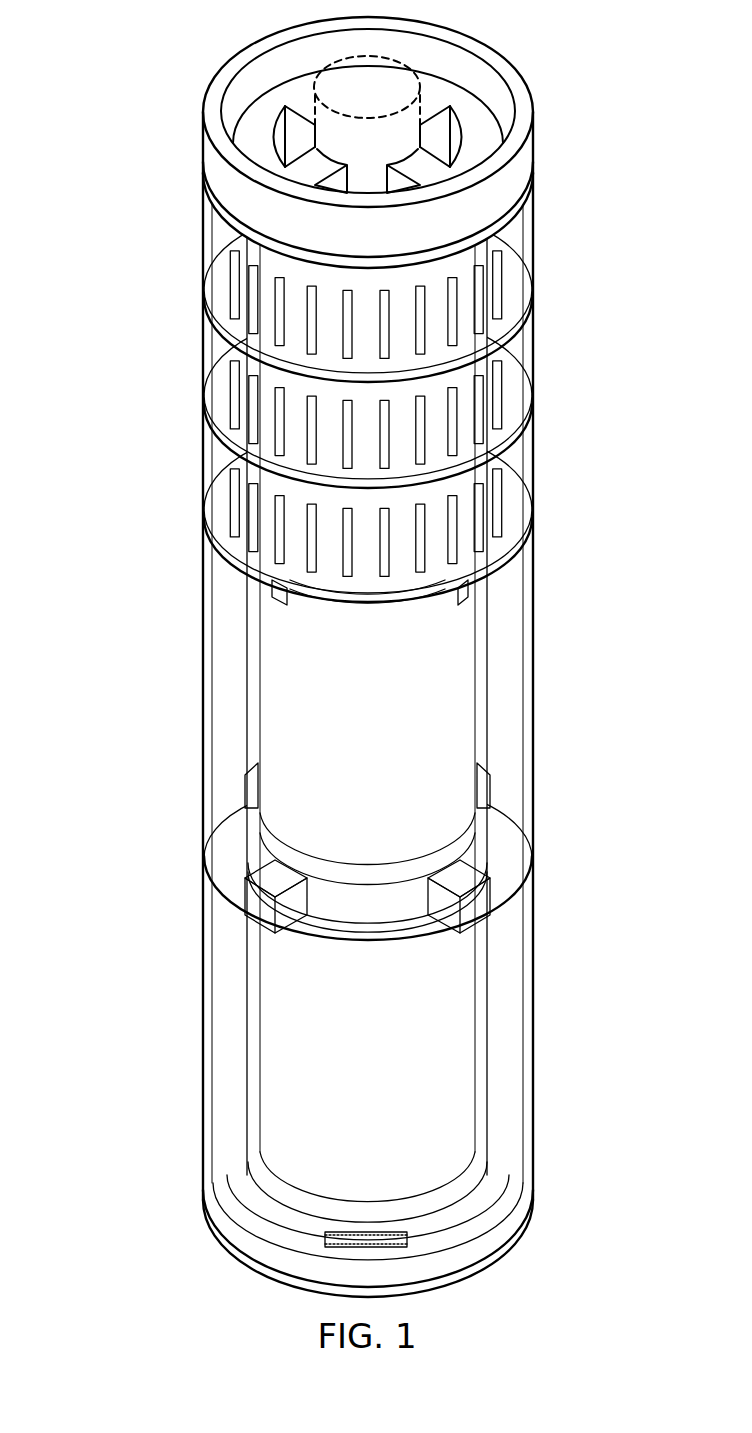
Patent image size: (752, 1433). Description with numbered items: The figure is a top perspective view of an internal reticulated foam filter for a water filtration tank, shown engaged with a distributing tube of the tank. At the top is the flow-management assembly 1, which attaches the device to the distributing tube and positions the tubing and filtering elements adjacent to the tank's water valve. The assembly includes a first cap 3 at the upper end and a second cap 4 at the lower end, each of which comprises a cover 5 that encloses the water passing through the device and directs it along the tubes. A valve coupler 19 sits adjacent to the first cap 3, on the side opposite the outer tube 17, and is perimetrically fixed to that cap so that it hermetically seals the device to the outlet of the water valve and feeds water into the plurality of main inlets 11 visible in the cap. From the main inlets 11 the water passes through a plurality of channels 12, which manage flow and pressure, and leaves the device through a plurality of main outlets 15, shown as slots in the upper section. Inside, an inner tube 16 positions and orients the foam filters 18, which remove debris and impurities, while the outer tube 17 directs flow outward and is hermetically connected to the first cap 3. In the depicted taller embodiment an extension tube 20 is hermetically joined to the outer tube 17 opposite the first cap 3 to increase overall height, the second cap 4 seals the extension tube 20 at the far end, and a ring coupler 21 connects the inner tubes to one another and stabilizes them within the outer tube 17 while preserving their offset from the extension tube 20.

The flow-management assembly 1 is at (172, 110).
The first cap 3 is at (563, 198).
The second cap 4 is at (544, 1216).
The cover 5 is at (542, 183).
The main inlets 11 is at (281, 120).
The channels 12 is at (243, 1183).
The main outlets 15 is at (228, 290).
The inner tube 16 is at (255, 697).
The outer tube 17 is at (203, 455).
The foam filters 18 is at (477, 706).
The valve coupler 19 is at (523, 122).
The extension tube 20 is at (210, 962).
The ring coupler 21 is at (496, 892).